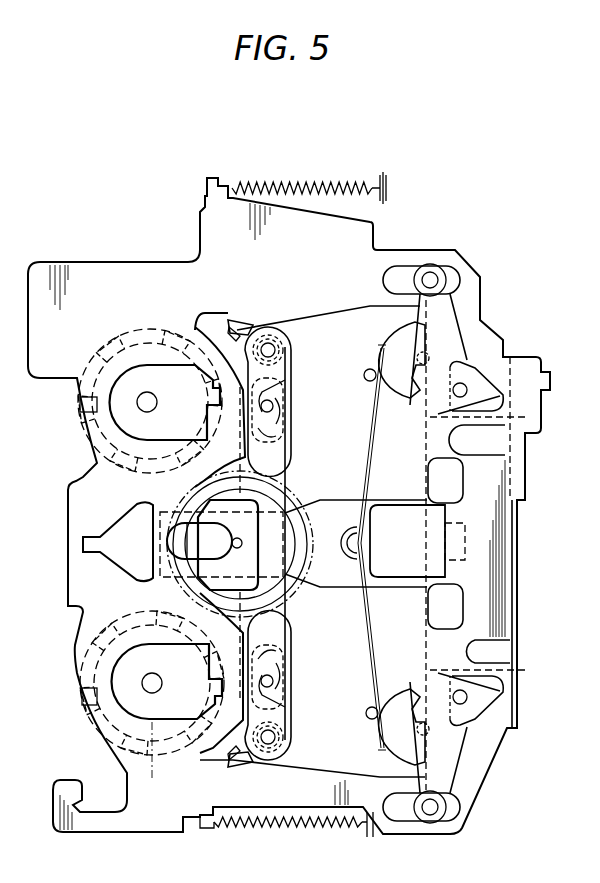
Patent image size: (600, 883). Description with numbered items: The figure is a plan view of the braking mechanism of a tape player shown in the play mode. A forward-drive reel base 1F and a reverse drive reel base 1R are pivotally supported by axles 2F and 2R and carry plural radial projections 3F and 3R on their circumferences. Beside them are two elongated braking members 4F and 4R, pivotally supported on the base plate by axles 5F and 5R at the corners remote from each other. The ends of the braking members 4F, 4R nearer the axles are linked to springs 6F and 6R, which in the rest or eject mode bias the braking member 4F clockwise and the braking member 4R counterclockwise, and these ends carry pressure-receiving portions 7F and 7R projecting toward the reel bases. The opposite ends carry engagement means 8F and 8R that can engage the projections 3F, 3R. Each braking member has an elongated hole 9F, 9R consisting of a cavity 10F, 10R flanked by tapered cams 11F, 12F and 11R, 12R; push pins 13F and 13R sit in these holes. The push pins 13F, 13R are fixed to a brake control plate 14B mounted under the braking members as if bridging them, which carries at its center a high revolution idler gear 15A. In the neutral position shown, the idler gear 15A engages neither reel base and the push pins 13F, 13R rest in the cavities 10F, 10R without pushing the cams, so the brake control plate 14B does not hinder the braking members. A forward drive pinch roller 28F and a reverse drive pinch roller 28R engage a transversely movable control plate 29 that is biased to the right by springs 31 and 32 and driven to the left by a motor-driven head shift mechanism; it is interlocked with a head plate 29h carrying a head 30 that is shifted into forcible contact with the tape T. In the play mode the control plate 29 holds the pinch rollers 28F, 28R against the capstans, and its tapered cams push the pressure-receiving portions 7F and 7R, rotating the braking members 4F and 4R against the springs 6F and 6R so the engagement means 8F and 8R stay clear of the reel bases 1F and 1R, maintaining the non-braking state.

The forward-drive reel base 1F is at (97, 372).
The reverse drive reel base 1R is at (100, 660).
The axle 2F is at (155, 408).
The axle 2R is at (160, 688).
The projections 3F is at (80, 404).
The projections 3R is at (82, 694).
The braking member 4F is at (268, 457).
The braking member 4R is at (278, 623).
The axle 5F is at (281, 351).
The axle 5R is at (285, 742).
The spring 6F is at (318, 312).
The spring 6R is at (315, 776).
The pressure-receiving portion 7F is at (247, 320).
The pressure-receiving portion 7R is at (245, 772).
The engagement means 8F is at (200, 502).
The engagement means 8R is at (205, 606).
The elongated hole 9F is at (268, 421).
The elongated hole 9R is at (270, 692).
The cavity 10F is at (272, 410).
The cavity 10R is at (272, 678).
The tapered cam 11F is at (281, 379).
The tapered cam 11R is at (282, 661).
The tapered cam 12F is at (262, 437).
The tapered cam 12R is at (266, 706).
The push pin 13F is at (273, 405).
The push pin 13R is at (273, 683).
The brake control plate 14B is at (280, 531).
The high revolution idler gear 15A is at (288, 548).
The forward drive pinch roller 28F is at (400, 396).
The reverse drive pinch roller 28R is at (398, 690).
The control plate 29 is at (373, 232).
The head plate 29h is at (314, 575).
The head 30 is at (377, 516).
The spring 31 is at (332, 186).
The spring 32 is at (275, 828).
The tape T is at (366, 596).